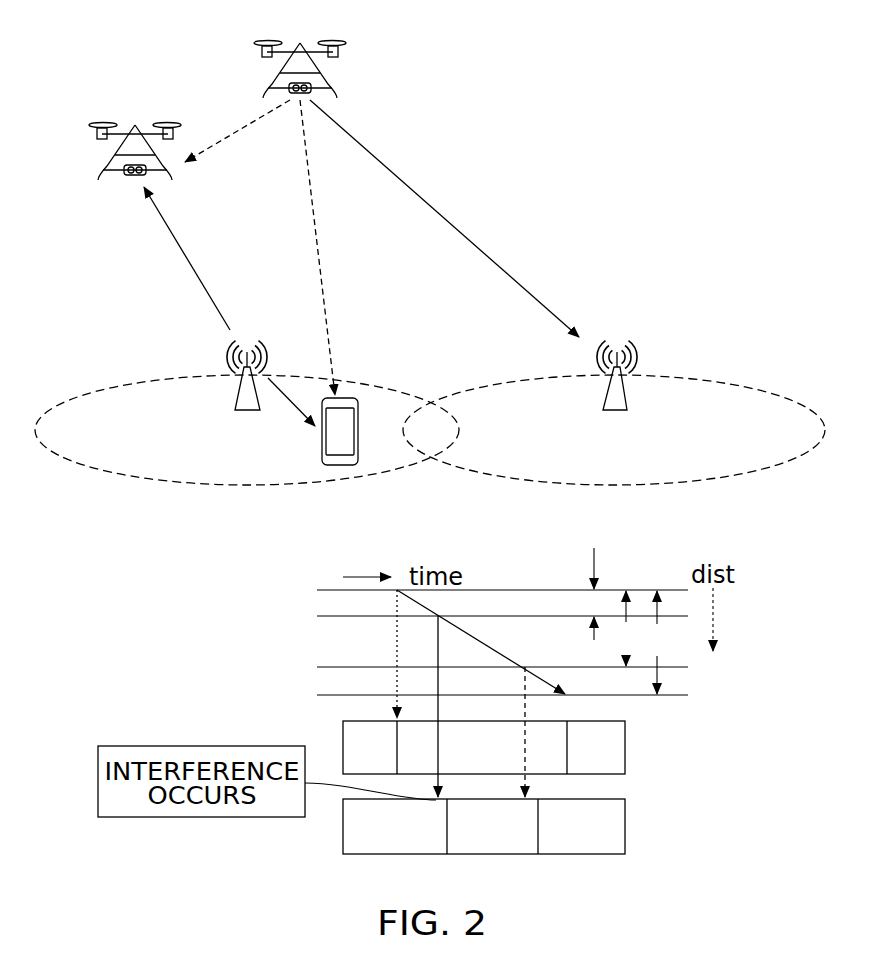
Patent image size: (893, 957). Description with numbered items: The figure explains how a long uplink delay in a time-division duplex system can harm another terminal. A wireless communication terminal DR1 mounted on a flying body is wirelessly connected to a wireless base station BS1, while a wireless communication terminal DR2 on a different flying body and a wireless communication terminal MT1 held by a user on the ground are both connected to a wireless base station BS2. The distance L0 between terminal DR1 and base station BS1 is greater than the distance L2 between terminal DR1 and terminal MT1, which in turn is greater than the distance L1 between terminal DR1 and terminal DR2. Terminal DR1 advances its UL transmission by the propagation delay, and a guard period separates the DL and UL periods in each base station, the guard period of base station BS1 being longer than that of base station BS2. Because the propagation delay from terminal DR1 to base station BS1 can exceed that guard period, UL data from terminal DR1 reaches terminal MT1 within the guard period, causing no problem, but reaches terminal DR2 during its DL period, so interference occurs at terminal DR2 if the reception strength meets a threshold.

The wireless communication terminal DR1 is at (471, 303).
The wireless communication terminal DR2 is at (388, 352).
The wireless base station BS1 is at (476, 557).
The wireless base station BS2 is at (451, 597).
The wireless communication terminal MT1 is at (476, 538).
The distance L0 is at (489, 397).
The distance L1 is at (390, 370).
The distance L2 is at (469, 383).